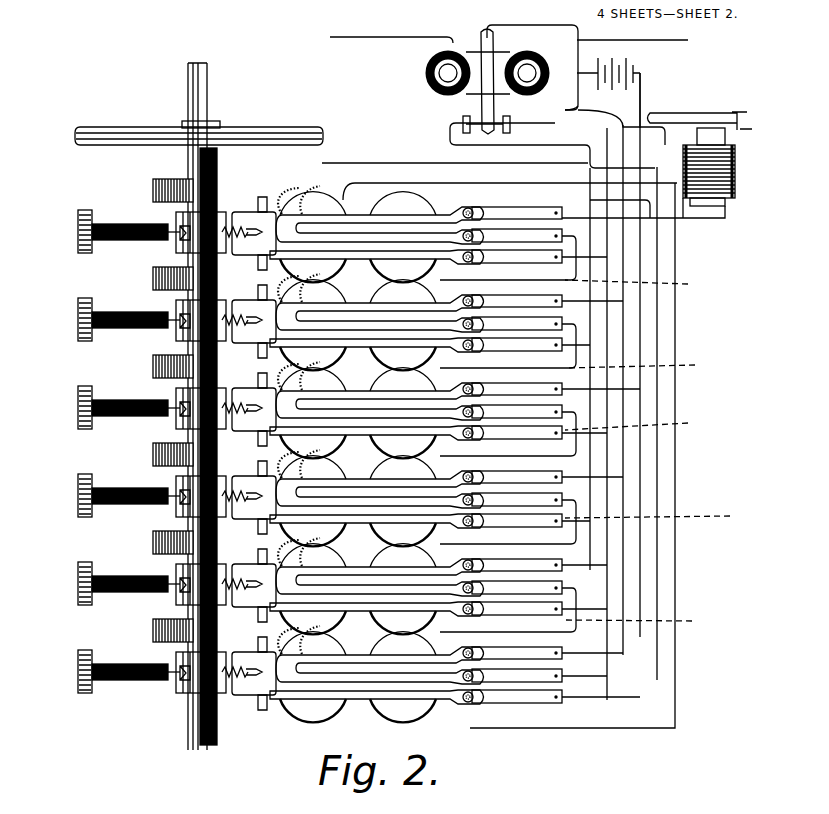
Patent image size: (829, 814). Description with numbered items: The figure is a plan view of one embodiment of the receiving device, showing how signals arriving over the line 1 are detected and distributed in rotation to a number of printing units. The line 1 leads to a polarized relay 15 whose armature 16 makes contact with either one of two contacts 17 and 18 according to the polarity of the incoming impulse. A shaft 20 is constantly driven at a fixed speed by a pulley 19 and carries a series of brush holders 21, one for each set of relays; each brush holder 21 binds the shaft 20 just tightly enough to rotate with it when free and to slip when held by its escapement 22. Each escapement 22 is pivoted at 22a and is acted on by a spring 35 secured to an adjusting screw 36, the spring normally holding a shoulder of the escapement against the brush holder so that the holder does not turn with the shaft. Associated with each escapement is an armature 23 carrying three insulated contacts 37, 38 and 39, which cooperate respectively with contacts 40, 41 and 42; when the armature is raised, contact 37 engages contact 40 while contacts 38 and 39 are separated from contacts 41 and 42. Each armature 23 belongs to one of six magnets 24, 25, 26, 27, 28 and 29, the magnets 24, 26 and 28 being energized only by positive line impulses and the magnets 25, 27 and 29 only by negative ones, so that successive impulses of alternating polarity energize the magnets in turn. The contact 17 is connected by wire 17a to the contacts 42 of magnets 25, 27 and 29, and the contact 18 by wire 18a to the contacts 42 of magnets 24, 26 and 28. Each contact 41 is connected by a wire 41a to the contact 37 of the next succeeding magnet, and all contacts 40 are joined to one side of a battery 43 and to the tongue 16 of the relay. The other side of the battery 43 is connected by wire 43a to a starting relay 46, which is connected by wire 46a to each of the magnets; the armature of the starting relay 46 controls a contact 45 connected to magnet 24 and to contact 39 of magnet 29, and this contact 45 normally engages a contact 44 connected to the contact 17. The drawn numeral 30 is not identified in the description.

The line 1 is at (364, 37).
The polarized relay 15 is at (425, 71).
The armature 16 is at (484, 33).
The contact 17 is at (507, 128).
The wire 17a is at (565, 452).
The contact 18 is at (458, 122).
The wire 18a is at (565, 474).
The pulley 19 is at (90, 130).
The shaft 20 is at (220, 162).
The brush holder 21 is at (178, 693).
The escapement 22 is at (270, 213).
The pivot 22a is at (263, 196).
The armature 23 is at (402, 212).
The magnet 24 is at (433, 245).
The magnet 25 is at (430, 327).
The magnet 26 is at (430, 413).
The magnet 27 is at (430, 502).
The magnet 28 is at (430, 589).
The magnet 29 is at (430, 678).
The pivot pin 30 is at (203, 656).
The spring 35 is at (178, 680).
The adjusting screw 36 is at (78, 671).
The contact 37 is at (410, 655).
The contact 38 is at (437, 700).
The contact 39 is at (450, 712).
The contact 40 is at (565, 655).
The contact 41 is at (565, 676).
The wire 41a is at (668, 453).
The contact 42 is at (565, 609).
The battery 43 is at (618, 54).
The wire 43a is at (643, 84).
The contact 44 is at (727, 117).
The contact 45 is at (753, 133).
The starting relay 46 is at (737, 187).
The wire 46a is at (727, 212).